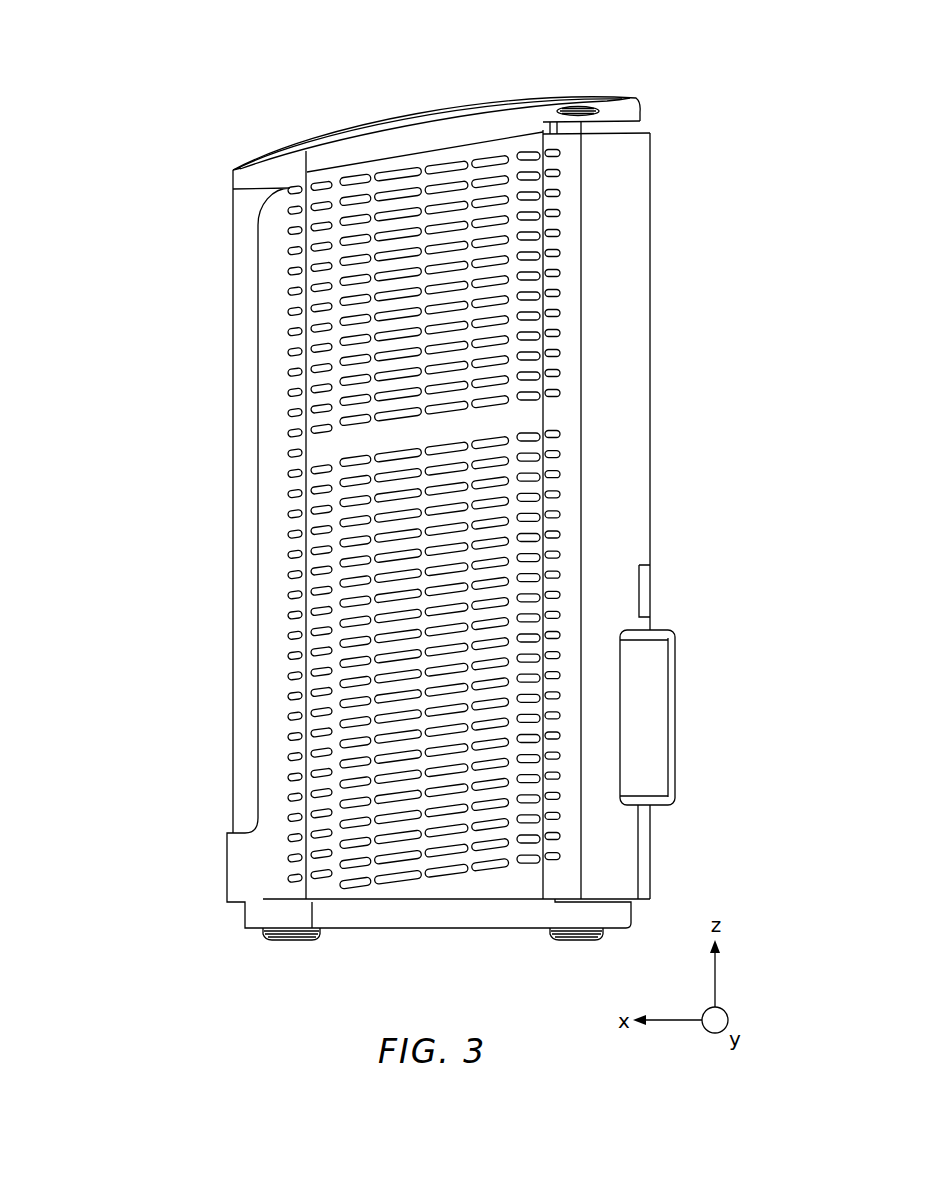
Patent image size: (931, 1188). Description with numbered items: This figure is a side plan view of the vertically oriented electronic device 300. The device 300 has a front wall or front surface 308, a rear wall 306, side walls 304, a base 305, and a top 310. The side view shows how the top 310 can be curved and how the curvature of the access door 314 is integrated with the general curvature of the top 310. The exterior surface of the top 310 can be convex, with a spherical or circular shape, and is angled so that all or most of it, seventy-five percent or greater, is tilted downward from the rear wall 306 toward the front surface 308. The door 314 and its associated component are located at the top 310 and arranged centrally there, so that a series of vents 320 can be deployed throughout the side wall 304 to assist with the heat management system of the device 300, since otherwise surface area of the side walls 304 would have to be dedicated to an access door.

The vertically oriented electronic device 300 is at (655, 72).
The side walls 304 is at (517, 883).
The base 305 is at (412, 933).
The rear wall 306 is at (657, 414).
The front wall 308 is at (238, 497).
The top 310 is at (487, 112).
The access door 314 is at (328, 138).
The vents 320 is at (395, 337).